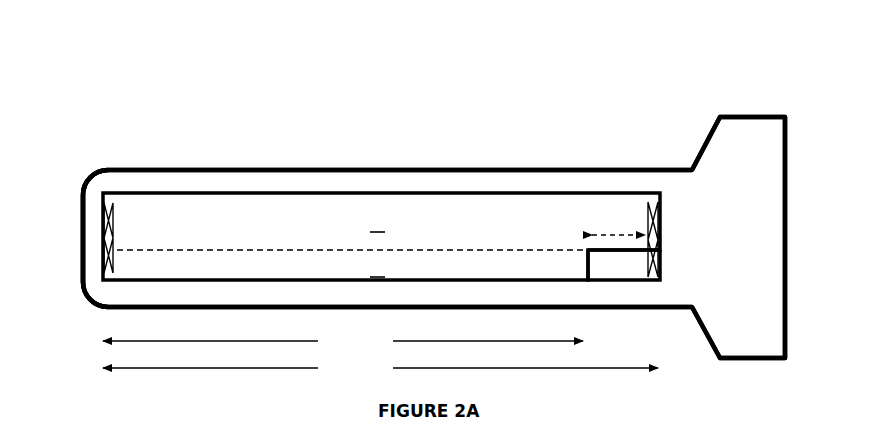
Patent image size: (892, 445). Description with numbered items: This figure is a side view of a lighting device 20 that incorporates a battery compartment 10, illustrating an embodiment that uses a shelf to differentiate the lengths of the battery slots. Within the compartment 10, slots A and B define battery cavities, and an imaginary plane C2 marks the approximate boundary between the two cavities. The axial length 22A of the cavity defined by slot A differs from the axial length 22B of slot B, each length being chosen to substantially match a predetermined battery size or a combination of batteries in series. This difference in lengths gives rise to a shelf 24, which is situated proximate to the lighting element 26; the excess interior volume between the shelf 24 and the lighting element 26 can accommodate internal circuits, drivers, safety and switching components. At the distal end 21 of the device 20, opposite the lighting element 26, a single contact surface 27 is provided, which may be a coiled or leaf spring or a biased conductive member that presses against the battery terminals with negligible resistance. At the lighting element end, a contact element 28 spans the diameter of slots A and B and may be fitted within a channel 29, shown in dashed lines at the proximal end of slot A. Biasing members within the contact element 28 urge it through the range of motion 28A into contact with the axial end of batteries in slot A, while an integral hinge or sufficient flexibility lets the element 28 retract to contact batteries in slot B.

The battery compartment 10 is at (342, 182).
The lighting device 20 is at (181, 154).
The distal end 21 is at (83, 185).
The axial length 22A is at (343, 344).
The axial length 22B is at (380, 370).
The shelf 24 is at (613, 263).
The lighting element 26 is at (741, 240).
The contact surface 27 is at (113, 228).
The contact element 28 is at (650, 202).
The range of motion 28A is at (610, 232).
The channel 29 is at (642, 280).
The imaginary plane C2 is at (400, 247).
The slot A is at (377, 268).
The slot B is at (377, 223).